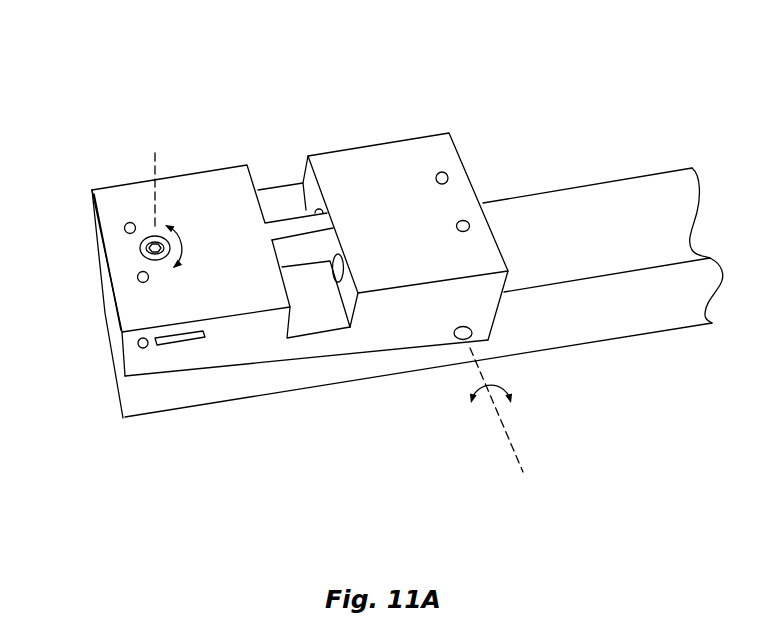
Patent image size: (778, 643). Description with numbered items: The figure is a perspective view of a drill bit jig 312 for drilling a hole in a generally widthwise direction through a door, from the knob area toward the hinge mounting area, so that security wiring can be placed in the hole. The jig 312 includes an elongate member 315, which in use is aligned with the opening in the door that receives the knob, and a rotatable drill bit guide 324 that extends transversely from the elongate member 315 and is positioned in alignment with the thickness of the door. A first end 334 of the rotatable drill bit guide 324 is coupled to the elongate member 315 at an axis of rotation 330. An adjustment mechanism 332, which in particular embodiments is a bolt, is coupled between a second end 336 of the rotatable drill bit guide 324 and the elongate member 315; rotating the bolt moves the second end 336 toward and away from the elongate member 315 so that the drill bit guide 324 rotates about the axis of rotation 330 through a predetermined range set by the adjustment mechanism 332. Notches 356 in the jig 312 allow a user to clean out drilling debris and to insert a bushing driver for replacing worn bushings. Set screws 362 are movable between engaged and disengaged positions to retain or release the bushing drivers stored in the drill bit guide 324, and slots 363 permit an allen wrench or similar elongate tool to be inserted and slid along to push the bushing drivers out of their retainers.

The jig 312 is at (500, 53).
The elongate member 315 is at (555, 337).
The rotatable drill bit guide 324 is at (255, 345).
The axis of rotation 330 is at (460, 338).
The adjustment mechanism 332 is at (140, 248).
The first end 334 is at (450, 133).
The second end 336 is at (107, 227).
The notches 356 is at (315, 308).
The set screws 362 is at (143, 348).
The slots 363 is at (178, 340).